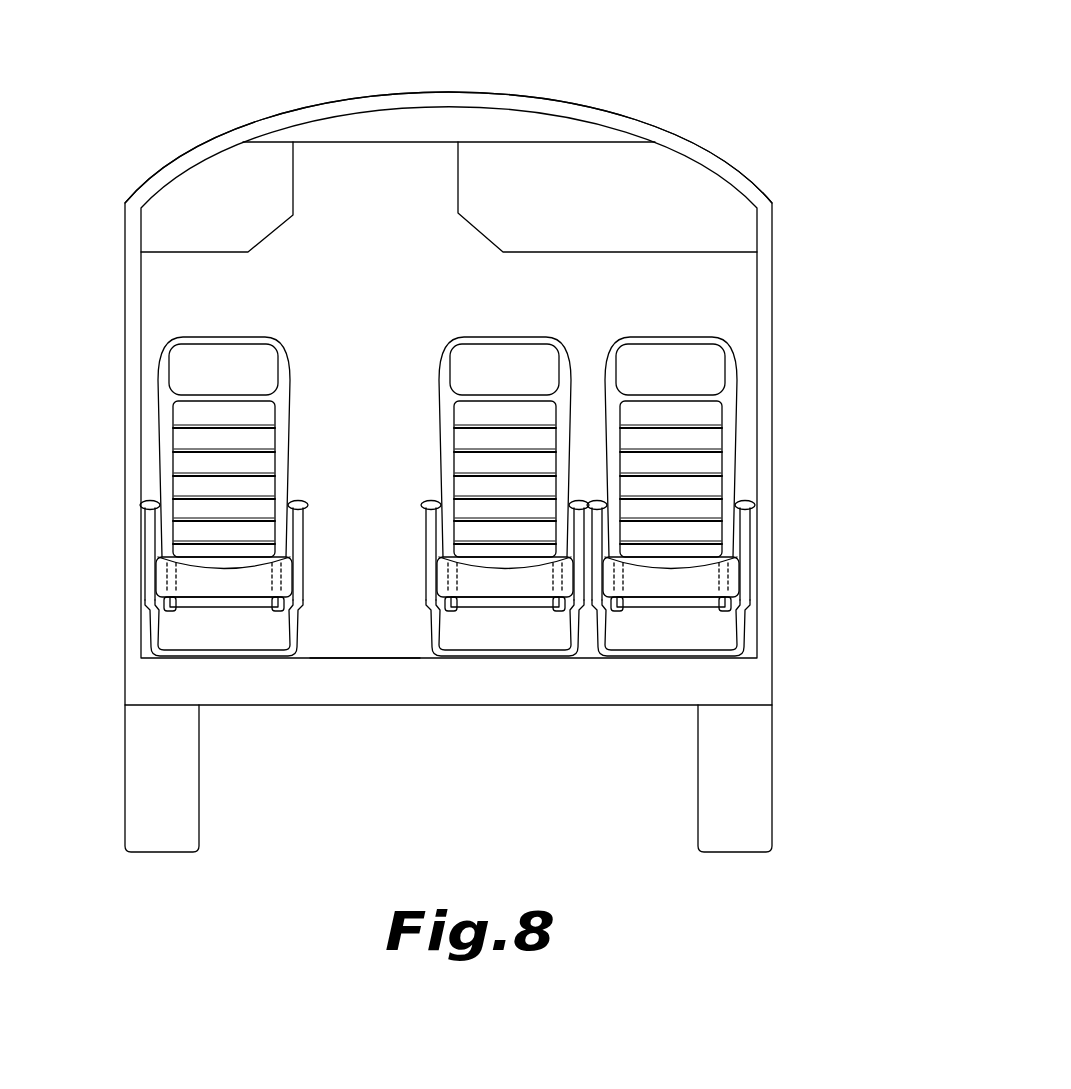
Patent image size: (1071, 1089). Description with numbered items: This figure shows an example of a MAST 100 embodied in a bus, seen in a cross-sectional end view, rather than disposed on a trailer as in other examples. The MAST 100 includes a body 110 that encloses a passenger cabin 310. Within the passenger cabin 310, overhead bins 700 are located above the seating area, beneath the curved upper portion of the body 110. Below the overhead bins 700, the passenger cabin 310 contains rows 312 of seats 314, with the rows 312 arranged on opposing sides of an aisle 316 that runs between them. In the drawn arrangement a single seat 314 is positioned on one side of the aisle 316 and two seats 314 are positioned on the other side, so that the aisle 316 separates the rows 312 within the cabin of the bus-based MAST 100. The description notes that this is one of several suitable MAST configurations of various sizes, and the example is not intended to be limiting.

The MAST 100 is at (690, 108).
The body 110 is at (183, 150).
The passenger cabin 310 is at (342, 152).
The rows 312 is at (143, 443).
The seats 314 is at (435, 572).
The aisle 316 is at (358, 433).
The overhead bins 700 is at (293, 170).